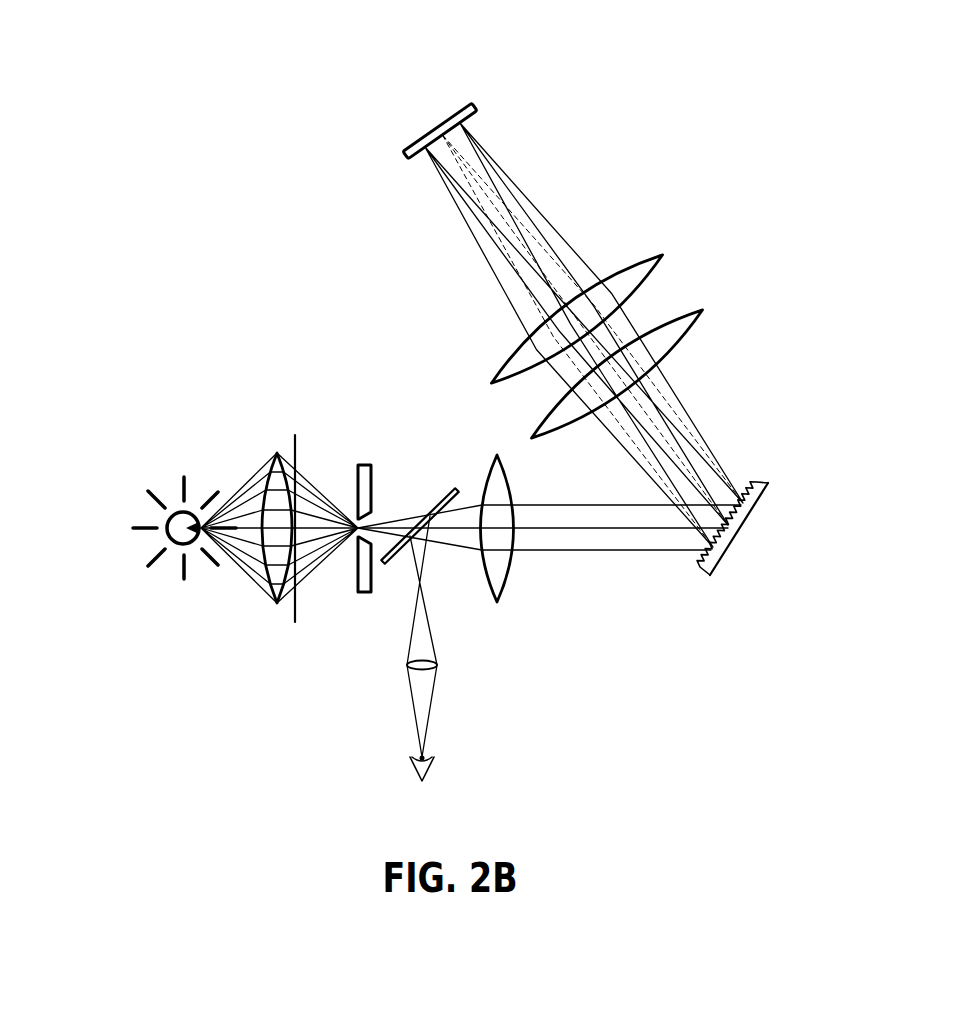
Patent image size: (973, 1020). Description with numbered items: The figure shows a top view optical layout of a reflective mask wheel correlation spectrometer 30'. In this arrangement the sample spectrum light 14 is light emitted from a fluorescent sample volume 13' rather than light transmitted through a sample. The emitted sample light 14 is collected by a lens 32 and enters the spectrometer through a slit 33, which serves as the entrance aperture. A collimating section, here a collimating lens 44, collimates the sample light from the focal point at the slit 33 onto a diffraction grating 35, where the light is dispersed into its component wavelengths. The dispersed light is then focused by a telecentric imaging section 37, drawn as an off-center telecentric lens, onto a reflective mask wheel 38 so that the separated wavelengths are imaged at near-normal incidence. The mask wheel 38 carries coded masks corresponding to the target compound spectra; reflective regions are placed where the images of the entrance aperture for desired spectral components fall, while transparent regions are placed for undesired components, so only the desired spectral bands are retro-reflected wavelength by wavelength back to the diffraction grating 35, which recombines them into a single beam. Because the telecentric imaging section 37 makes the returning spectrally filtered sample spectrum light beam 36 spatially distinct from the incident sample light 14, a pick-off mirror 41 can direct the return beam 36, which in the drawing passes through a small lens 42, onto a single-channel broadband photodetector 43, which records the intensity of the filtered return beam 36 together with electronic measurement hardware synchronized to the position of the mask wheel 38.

The reflective mask wheel correlation spectrometer 30' is at (441, 378).
The fluorescent sample volume 13' is at (173, 577).
The lens 32 is at (275, 453).
The sample spectrum light 14 is at (327, 517).
The slit 33 is at (367, 465).
The pick-off mirror 41 is at (385, 562).
The collimating lens 44 is at (510, 580).
The spectrally filtered sample spectrum light beam 36 is at (430, 623).
The focusing lens 42 is at (437, 670).
The single-channel broadband photodetector 43 is at (432, 768).
The diffraction grating 35 is at (740, 522).
The telecentric imaging section 37 is at (667, 233).
The reflective mask wheel 38 is at (438, 132).